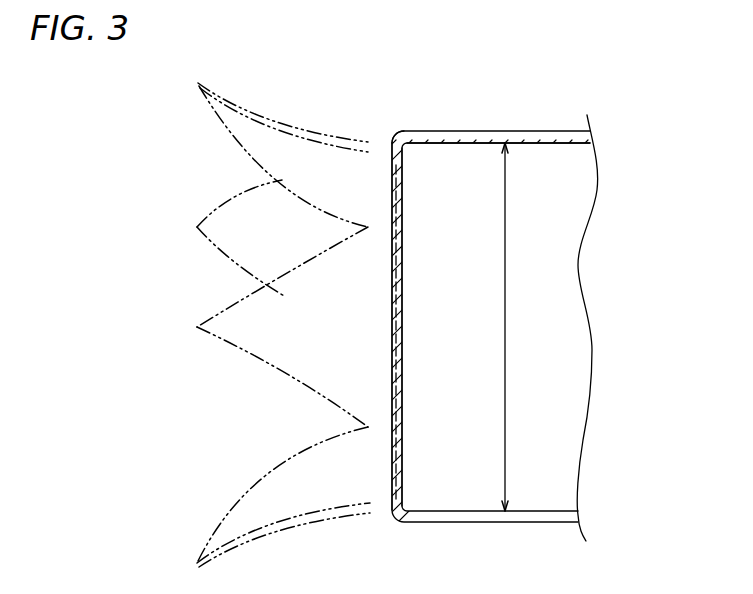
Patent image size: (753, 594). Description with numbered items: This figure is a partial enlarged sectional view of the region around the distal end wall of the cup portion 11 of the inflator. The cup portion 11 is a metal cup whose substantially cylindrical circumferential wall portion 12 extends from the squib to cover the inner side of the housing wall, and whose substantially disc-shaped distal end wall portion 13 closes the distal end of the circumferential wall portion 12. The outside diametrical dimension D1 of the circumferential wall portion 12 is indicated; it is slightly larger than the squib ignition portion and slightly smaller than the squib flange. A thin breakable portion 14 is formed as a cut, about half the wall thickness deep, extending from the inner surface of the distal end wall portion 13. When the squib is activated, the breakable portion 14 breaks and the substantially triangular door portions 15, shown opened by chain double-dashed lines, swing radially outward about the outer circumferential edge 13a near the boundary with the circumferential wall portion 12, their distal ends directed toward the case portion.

The cup portion 11 is at (548, 127).
The circumferential wall portion 12 is at (558, 143).
The distal end wall portion 13 is at (383, 375).
The outer circumferential edge 13a is at (402, 135).
The breakable portion 14 is at (402, 367).
The door portion 15 is at (263, 325).
The outside diametrical dimension D1 is at (505, 296).